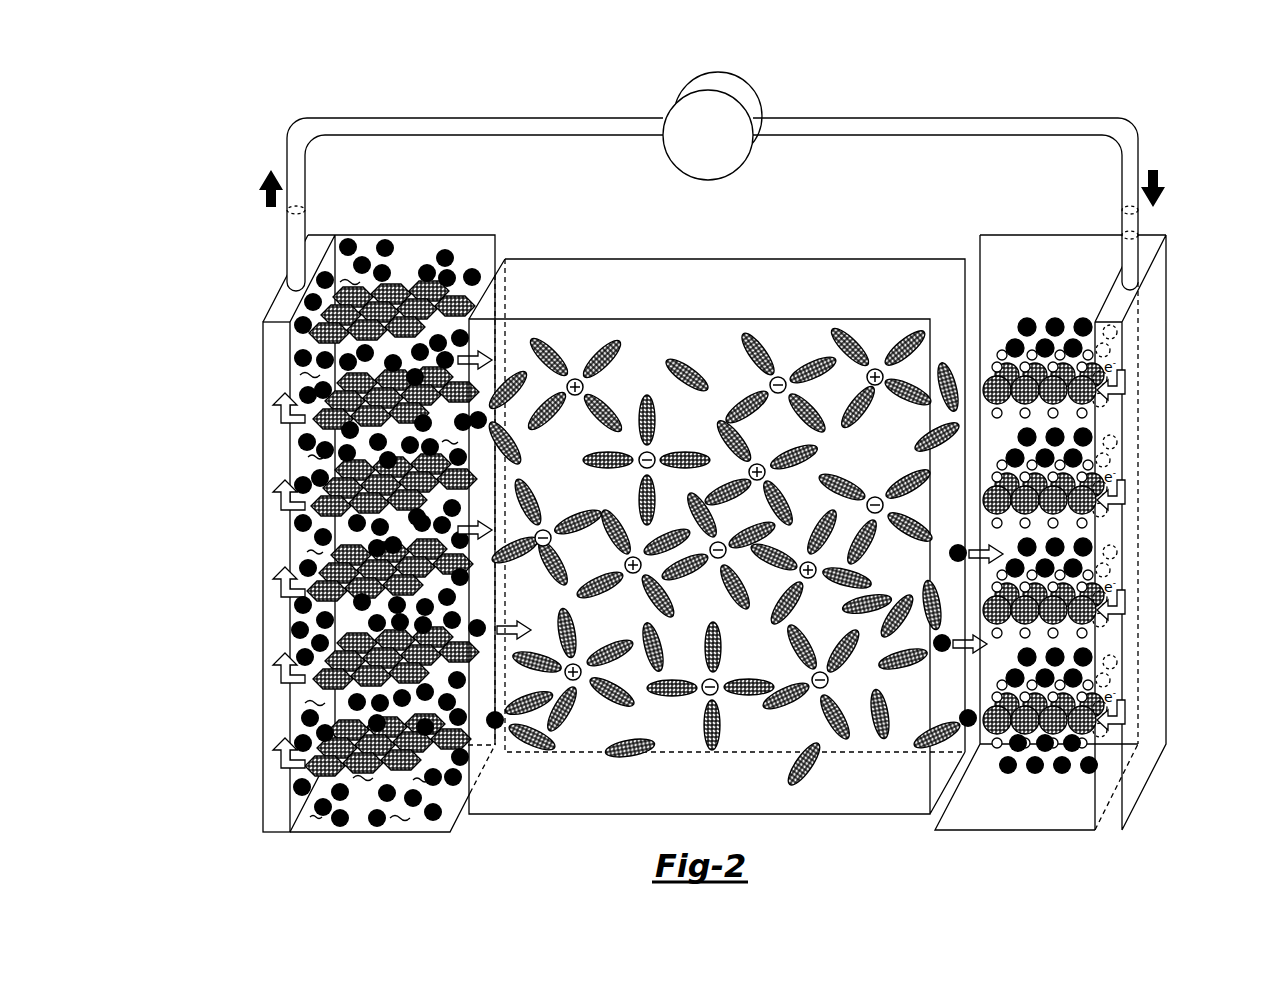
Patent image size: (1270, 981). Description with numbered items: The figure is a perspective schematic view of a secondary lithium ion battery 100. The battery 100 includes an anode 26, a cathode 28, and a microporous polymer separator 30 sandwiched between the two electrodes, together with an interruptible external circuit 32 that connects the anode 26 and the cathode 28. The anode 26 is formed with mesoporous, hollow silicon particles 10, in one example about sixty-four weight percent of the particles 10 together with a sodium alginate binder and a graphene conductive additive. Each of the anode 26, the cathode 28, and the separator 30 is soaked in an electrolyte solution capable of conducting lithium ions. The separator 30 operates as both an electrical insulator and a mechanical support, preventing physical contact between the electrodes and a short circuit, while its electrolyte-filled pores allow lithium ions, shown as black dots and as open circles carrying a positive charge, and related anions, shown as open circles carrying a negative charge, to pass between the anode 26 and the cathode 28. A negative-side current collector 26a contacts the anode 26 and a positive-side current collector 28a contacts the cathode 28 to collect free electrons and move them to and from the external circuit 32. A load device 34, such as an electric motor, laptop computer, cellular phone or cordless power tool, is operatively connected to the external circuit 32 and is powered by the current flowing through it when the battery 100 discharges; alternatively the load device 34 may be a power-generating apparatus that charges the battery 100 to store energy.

The mesoporous, hollow silicon particles 10 is at (468, 254).
The anode 26 is at (360, 795).
The negative-side current collector 26a is at (277, 807).
The cathode 28 is at (1003, 782).
The positive-side current collector 28a is at (1108, 824).
The microporous polymer separator 30 is at (497, 816).
The interruptible external circuit 32 is at (548, 118).
The load device 34 is at (757, 96).
The secondary lithium ion battery 100 is at (1172, 126).